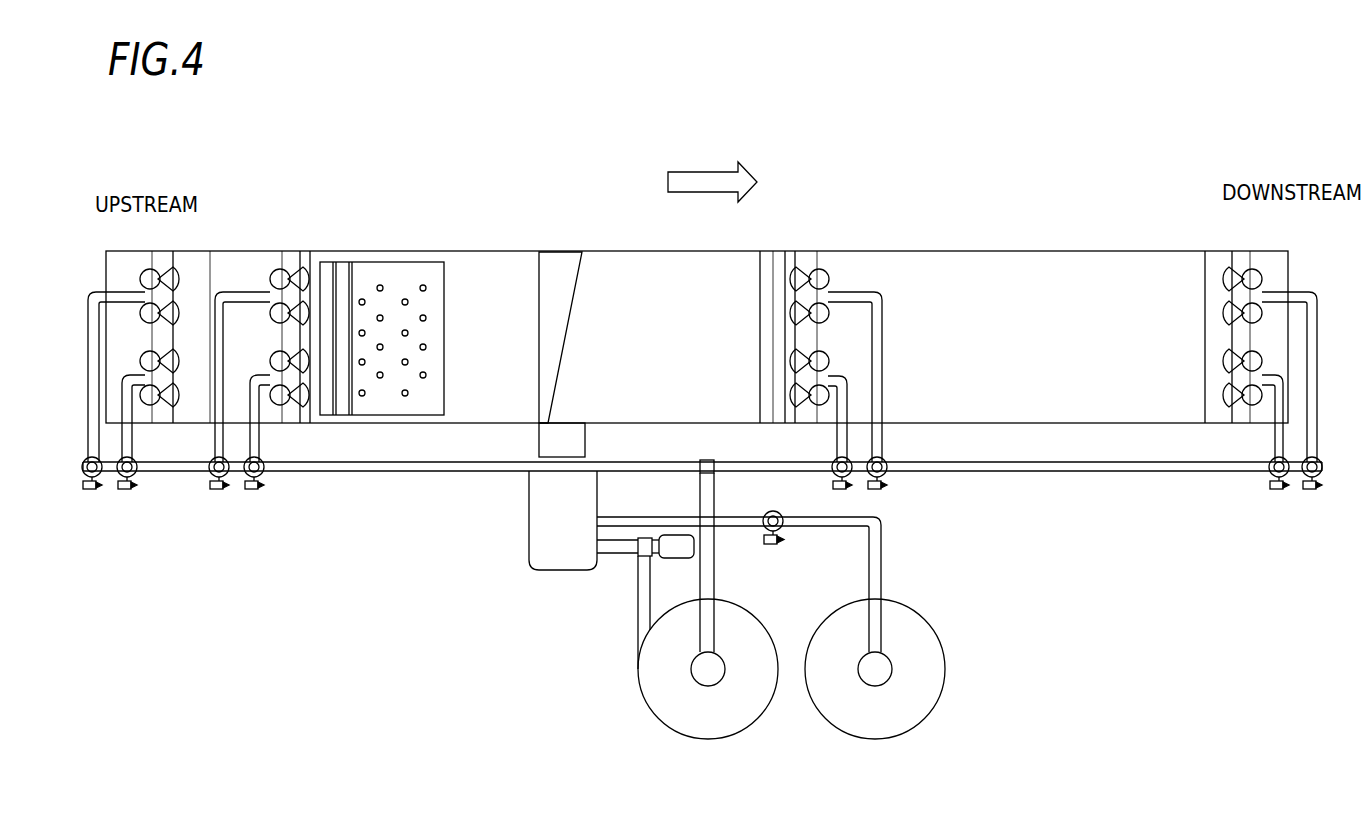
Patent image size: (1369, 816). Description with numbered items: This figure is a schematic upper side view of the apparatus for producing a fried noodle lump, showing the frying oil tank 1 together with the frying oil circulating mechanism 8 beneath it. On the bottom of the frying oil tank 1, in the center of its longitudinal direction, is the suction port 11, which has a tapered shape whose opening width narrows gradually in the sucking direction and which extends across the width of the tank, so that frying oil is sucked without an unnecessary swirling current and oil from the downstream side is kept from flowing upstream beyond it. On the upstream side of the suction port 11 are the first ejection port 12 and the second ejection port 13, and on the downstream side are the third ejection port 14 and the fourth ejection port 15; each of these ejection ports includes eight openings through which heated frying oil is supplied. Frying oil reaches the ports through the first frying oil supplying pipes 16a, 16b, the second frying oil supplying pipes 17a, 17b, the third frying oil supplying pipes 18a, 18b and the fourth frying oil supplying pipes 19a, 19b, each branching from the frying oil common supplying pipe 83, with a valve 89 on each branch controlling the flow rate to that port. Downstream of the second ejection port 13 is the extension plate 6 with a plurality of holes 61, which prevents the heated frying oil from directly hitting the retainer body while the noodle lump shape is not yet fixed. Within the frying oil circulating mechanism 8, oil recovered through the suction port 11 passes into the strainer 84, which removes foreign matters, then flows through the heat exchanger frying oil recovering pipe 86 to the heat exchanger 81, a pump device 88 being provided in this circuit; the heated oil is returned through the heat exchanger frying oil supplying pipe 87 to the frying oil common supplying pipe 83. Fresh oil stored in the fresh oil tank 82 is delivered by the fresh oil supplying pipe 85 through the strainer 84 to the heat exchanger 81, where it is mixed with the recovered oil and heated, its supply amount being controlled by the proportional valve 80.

The frying oil tank 1 is at (1105, 206).
The extension plate 6 is at (399, 337).
The frying oil circulating mechanism 8 is at (745, 615).
The suction port 11 is at (570, 281).
The first ejection port 12 is at (184, 249).
The second ejection port 13 is at (304, 249).
The third ejection port 14 is at (826, 249).
The fourth ejection port 15 is at (1256, 249).
The first frying oil supplying pipe 16a is at (98, 390).
The first frying oil supplying pipe 16b is at (141, 432).
The second frying oil supplying pipe 17a is at (225, 390).
The second frying oil supplying pipe 17b is at (267, 432).
The third frying oil supplying pipe 18a is at (828, 432).
The third frying oil supplying pipe 18b is at (874, 390).
The fourth frying oil supplying pipe 19a is at (1263, 432).
The fourth frying oil supplying pipe 19b is at (1307, 390).
The hole 61 is at (382, 291).
The proportional valve 80 is at (818, 549).
The heat exchanger 81 is at (665, 733).
The fresh oil tank 82 is at (835, 733).
The frying oil common supplying pipe 83 is at (1130, 474).
The strainer 84 is at (531, 574).
The fresh oil supplying pipe 85 is at (884, 586).
The heat exchanger frying oil recovering pipe 86 is at (636, 592).
The heat exchanger frying oil supplying pipe 87 is at (716, 588).
The pump device 88 is at (690, 562).
The valve 89 is at (1308, 494).